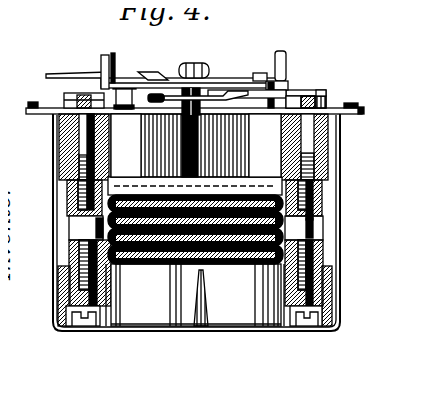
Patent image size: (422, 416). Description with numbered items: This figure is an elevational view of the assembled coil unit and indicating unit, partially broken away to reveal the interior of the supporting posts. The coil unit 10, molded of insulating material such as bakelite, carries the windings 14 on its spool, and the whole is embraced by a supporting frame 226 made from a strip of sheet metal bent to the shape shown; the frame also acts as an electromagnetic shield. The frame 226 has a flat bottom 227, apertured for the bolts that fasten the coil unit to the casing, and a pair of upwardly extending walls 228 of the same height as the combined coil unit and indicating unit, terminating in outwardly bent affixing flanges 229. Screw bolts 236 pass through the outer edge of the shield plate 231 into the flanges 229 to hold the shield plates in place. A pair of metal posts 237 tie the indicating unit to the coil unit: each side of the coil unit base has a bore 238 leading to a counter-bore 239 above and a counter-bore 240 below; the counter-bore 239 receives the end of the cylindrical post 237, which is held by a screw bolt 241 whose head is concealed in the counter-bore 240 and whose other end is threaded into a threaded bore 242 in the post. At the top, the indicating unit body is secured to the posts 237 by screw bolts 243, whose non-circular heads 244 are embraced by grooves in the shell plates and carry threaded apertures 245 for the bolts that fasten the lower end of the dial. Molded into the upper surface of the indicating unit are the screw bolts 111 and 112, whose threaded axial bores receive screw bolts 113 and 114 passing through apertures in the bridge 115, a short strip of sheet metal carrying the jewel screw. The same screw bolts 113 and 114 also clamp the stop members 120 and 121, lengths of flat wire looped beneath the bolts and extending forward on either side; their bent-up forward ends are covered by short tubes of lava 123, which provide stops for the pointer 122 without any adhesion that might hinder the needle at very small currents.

The coil unit 10 is at (44, 294).
The windings 14 is at (213, 255).
The screw bolt 111 is at (298, 88).
The screw bolt 112 is at (108, 88).
The screw bolt 113 is at (254, 70).
The screw bolt 114 is at (118, 70).
The bridge 115 is at (212, 72).
The stop member 120 is at (106, 46).
The stop member 121 is at (275, 48).
The pointer 122 is at (78, 65).
The tube of lava 123 is at (96, 48).
The supporting frame 226 is at (333, 214).
The flat bottom 227 is at (210, 321).
The upwardly extending walls 228 is at (61, 230).
The affixing flanges 229 is at (374, 114).
The shield plate 231 is at (60, 199).
The screw bolt 236 is at (30, 86).
The metal post 237 is at (314, 193).
The bore 238 is at (324, 275).
The counter-bore 239 is at (114, 266).
The counter-bore 240 is at (86, 319).
The screw bolt 241 is at (96, 296).
The threaded bore 242 is at (54, 260).
The screw bolt 243 is at (53, 154).
The non-circular head 244 is at (322, 95).
The threaded aperture 245 is at (300, 86).